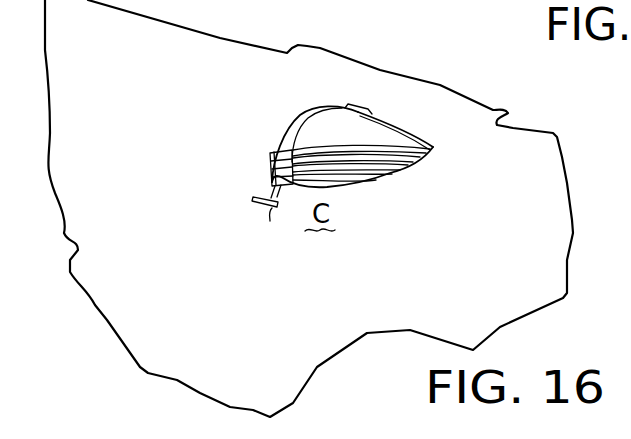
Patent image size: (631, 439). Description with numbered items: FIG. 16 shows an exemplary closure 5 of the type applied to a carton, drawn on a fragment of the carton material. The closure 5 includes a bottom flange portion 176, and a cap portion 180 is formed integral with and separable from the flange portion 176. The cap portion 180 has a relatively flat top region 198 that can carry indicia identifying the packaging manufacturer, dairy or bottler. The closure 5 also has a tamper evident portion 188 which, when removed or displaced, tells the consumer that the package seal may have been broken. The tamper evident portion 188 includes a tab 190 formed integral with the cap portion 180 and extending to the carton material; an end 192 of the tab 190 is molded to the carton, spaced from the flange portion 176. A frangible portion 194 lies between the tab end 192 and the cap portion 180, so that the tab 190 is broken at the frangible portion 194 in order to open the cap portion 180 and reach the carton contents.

The sensor device 5 is at (338, 103).
The bottom flange portion 176 is at (381, 174).
The cap portion 180 is at (383, 130).
The tamper evident portion 188 is at (230, 196).
The tab 190 is at (272, 166).
The end of the tab 192 is at (242, 201).
The frangible portion 194 is at (270, 192).
The flat top region 198 is at (314, 127).